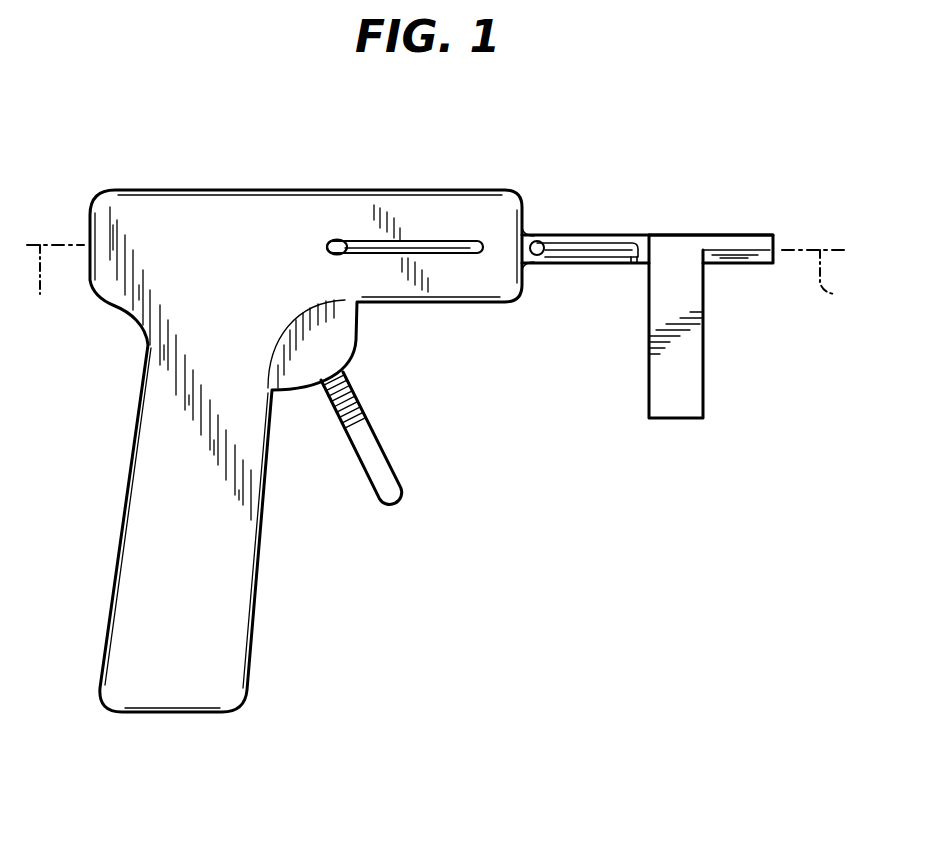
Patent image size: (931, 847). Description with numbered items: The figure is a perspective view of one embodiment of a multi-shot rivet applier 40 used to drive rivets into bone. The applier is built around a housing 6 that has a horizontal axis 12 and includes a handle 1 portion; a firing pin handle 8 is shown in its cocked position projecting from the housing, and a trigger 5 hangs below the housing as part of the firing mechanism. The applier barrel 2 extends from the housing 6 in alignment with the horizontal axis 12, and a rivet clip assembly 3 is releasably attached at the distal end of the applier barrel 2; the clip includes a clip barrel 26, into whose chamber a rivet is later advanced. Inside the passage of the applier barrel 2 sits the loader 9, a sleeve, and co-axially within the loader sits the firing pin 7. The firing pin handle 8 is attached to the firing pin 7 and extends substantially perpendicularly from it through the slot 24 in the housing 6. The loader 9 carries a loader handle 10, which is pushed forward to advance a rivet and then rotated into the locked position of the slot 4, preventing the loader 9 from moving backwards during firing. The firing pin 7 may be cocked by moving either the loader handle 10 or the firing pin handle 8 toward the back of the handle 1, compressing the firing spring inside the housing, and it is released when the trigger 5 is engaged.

The handle 1 is at (138, 403).
The applier barrel 2 is at (645, 234).
The rivet clip assembly 3 is at (703, 374).
The slot 4 is at (631, 265).
The trigger 5 is at (398, 480).
The housing 6 is at (201, 212).
The firing pin 7 is at (437, 252).
The firing pin handle 8 is at (339, 240).
The loader 9 is at (558, 247).
The loader handle 10 is at (538, 242).
The horizontal axis 12 is at (445, 285).
The slot 24 is at (458, 243).
The clip barrel 26 is at (750, 234).
The rivet applier 40 is at (271, 628).